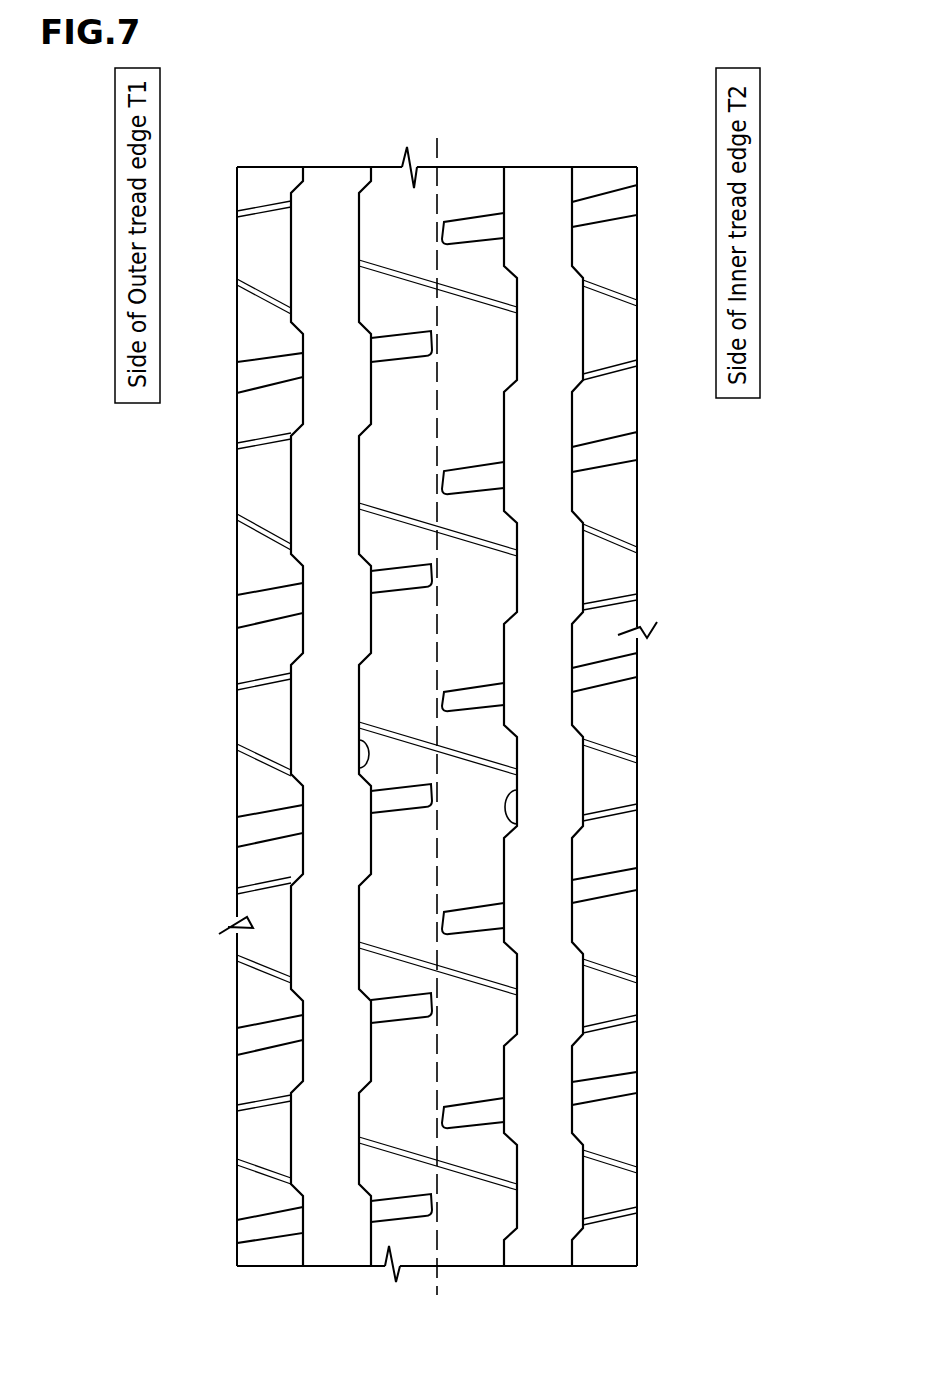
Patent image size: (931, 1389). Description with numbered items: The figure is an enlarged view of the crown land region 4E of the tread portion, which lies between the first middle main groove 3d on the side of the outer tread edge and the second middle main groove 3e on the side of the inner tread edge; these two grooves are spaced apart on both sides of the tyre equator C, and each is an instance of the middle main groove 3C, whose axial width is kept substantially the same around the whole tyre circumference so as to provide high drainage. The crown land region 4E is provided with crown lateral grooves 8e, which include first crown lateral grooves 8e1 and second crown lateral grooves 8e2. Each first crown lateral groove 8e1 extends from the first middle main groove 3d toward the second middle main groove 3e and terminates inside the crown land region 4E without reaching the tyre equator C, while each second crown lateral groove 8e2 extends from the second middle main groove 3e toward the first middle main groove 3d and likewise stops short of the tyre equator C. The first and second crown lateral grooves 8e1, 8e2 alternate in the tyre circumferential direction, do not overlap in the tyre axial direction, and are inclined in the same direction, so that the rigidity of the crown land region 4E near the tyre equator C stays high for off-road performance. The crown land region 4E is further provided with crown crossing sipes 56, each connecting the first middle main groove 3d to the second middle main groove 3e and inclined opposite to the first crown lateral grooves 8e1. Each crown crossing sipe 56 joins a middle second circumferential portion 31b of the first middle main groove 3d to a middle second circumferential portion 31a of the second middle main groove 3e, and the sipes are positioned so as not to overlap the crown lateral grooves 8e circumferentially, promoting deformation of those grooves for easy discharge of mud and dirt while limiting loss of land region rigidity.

The middle main groove 3C is at (327, 207).
The first middle main groove 3d is at (345, 675).
The second middle main groove 3e is at (533, 192).
The crown land region 4E is at (539, 637).
The tyre equator C is at (436, 703).
The crown lateral grooves 8e is at (470, 481).
The first crown lateral grooves 8e1 is at (398, 582).
The second crown lateral grooves 8e2 is at (617, 670).
The crown crossing sipes 56 is at (472, 760).
The middle second circumferential portions 31a is at (517, 824).
The middle second circumferential portions 31b is at (359, 768).